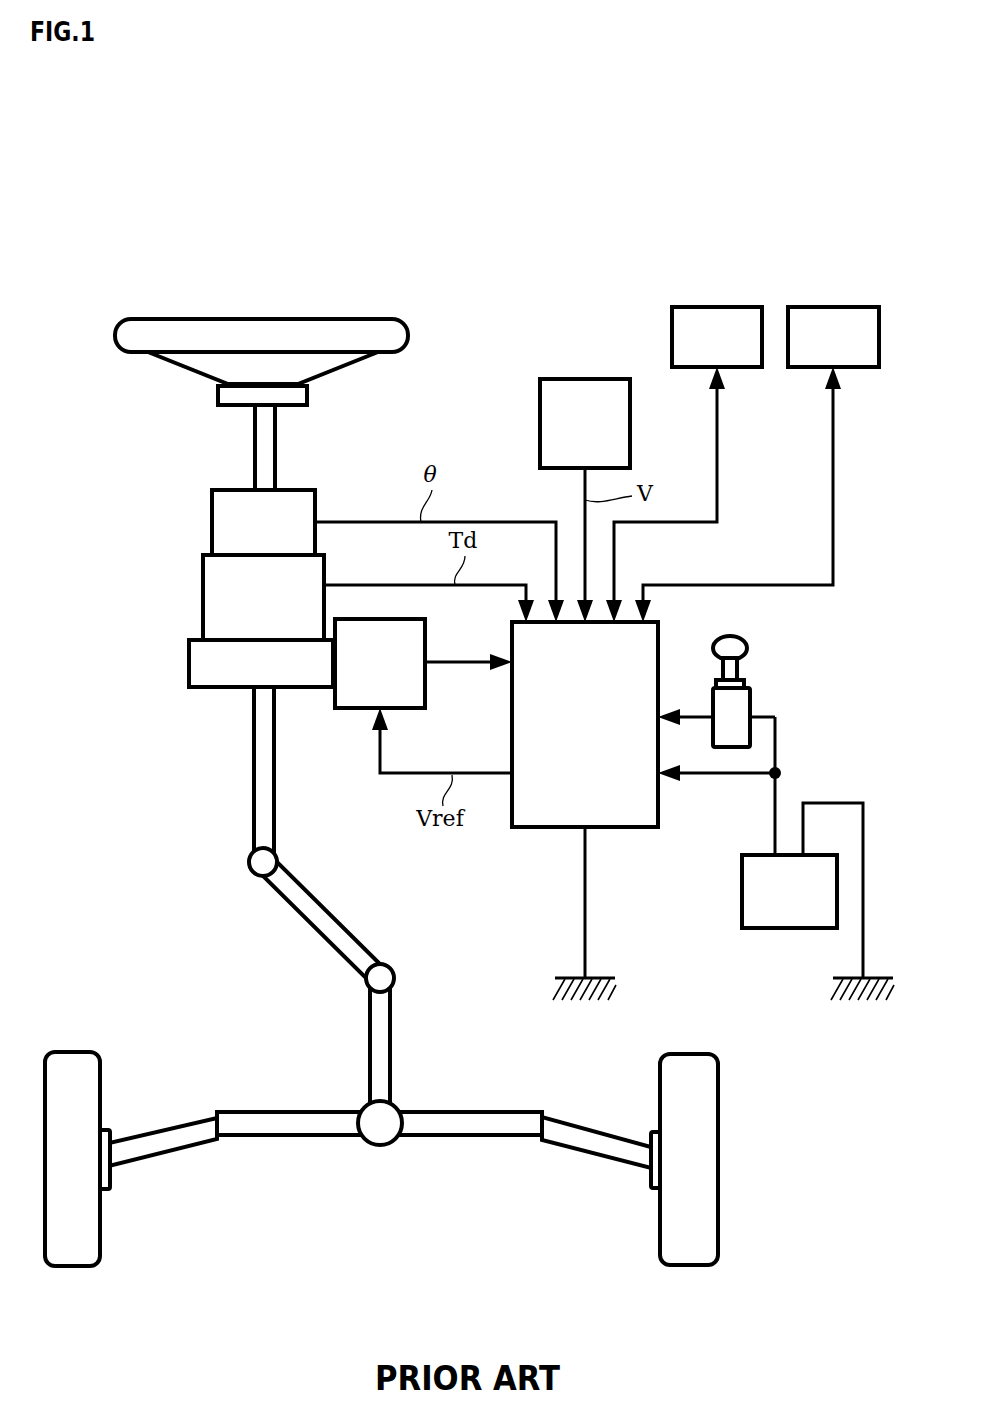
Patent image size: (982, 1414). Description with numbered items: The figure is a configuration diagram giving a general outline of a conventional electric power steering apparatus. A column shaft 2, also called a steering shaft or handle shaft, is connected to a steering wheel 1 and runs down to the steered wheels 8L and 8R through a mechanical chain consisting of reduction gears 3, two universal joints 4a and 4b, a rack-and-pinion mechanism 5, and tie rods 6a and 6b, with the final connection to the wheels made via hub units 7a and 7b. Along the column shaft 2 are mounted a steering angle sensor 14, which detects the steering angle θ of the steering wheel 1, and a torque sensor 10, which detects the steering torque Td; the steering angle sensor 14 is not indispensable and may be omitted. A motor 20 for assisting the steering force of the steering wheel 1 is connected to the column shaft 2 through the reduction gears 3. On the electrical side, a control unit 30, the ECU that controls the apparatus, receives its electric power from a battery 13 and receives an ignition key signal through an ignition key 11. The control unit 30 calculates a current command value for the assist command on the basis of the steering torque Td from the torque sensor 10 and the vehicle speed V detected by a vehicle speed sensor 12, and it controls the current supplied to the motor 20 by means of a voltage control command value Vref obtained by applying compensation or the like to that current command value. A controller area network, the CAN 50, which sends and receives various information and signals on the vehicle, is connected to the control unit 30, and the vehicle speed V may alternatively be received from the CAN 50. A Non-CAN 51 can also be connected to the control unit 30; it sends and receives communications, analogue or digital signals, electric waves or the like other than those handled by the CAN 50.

The steering wheel 1 is at (408, 324).
The column shaft 2 is at (255, 452).
The reduction gears 3 is at (189, 670).
The universal joint 4a is at (250, 868).
The universal joint 4b is at (366, 985).
The rack-and-pinion mechanism 5 is at (398, 1105).
The tie rod 6a is at (145, 1132).
The tie rod 6b is at (575, 1122).
The hub unit 7a is at (108, 1185).
The hub unit 7b is at (645, 1186).
The steered wheel 8L is at (100, 1255).
The steered wheel 8R is at (660, 1252).
The torque sensor 10 is at (203, 588).
The ignition key 11 is at (747, 648).
The vehicle speed sensor 12 is at (630, 390).
The battery 13 is at (742, 882).
The steering angle sensor 14 is at (212, 517).
The motor 20 is at (425, 624).
The control unit 30 is at (658, 626).
The controller area network (CAN) 50 is at (859, 307).
The Non-CAN 51 is at (742, 307).